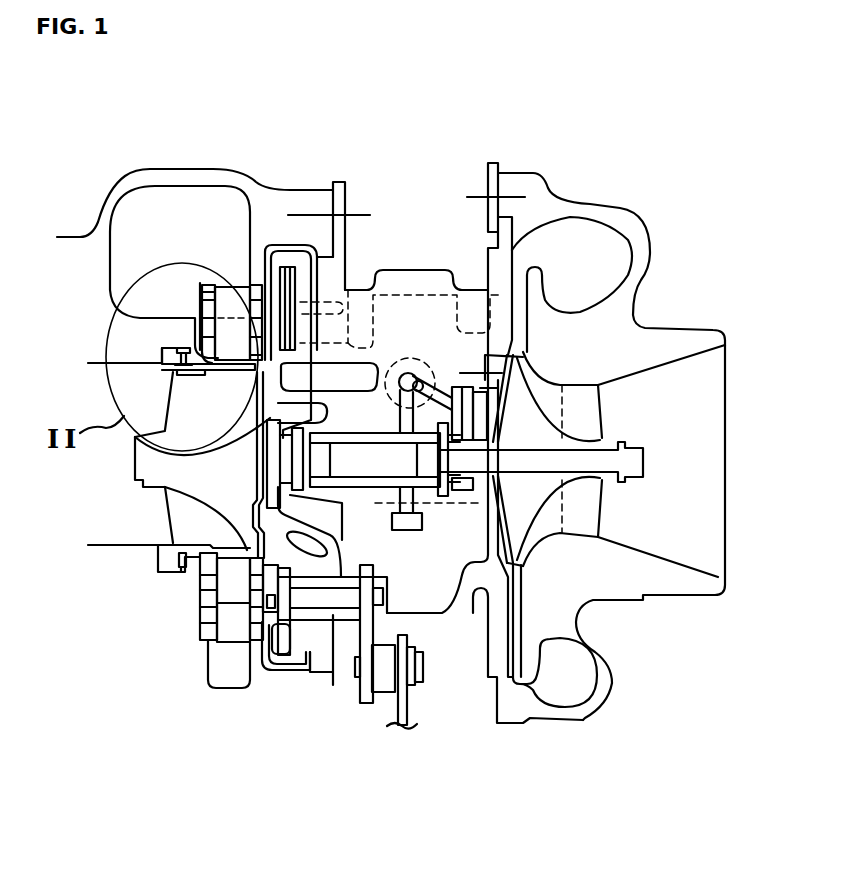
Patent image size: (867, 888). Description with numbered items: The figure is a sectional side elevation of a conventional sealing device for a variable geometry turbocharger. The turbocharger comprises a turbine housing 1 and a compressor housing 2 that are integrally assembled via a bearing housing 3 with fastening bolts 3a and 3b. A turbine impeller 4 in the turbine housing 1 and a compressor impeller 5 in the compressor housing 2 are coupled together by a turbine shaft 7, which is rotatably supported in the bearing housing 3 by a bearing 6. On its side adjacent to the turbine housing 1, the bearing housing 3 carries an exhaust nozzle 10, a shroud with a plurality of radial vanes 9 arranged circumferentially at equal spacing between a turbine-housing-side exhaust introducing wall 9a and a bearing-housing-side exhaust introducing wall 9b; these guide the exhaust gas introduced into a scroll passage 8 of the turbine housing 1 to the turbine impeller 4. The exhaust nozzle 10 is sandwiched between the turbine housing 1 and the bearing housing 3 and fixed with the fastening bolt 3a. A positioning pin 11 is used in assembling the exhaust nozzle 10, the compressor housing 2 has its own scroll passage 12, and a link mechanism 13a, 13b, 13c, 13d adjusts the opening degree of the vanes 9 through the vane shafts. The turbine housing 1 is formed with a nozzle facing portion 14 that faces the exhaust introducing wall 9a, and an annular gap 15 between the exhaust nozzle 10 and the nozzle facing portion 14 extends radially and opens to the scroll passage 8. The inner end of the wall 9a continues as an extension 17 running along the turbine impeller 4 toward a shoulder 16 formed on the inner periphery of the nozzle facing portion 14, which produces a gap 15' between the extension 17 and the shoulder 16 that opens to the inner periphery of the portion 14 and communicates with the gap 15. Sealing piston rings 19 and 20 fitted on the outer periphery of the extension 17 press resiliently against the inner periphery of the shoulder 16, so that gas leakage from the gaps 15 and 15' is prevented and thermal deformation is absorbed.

The turbine housing 1 is at (164, 160).
The compressor housing 2 is at (618, 200).
The bearing housing 3 is at (418, 250).
The fastening bolt 3a is at (360, 215).
The fastening bolt 3b is at (472, 197).
The turbine impeller 4 is at (182, 511).
The compressor impeller 5 is at (605, 413).
The bearing 6 is at (357, 487).
The turbine shaft 7 is at (562, 460).
The scroll passage 8 is at (158, 227).
The radial vanes 9 is at (230, 300).
The turbine-housing-side exhaust introducing wall 9a is at (205, 290).
The bearing-housing-side exhaust introducing wall 9b is at (256, 292).
The exhaust nozzle 10 is at (192, 284).
The positioning pin 11 is at (327, 308).
The scroll passage 12 is at (592, 260).
The link mechanism 13a is at (405, 700).
The link mechanism 13b is at (385, 582).
The link mechanism 13c is at (333, 603).
The link mechanism 13d is at (270, 672).
The nozzle facing portion 14 is at (186, 333).
The annular gap 15 is at (191, 483).
The gap 15' is at (157, 368).
The shoulder 16 is at (158, 348).
The extension 17 is at (205, 372).
The sealing piston ring 19 is at (177, 376).
The sealing piston ring 20 is at (193, 377).